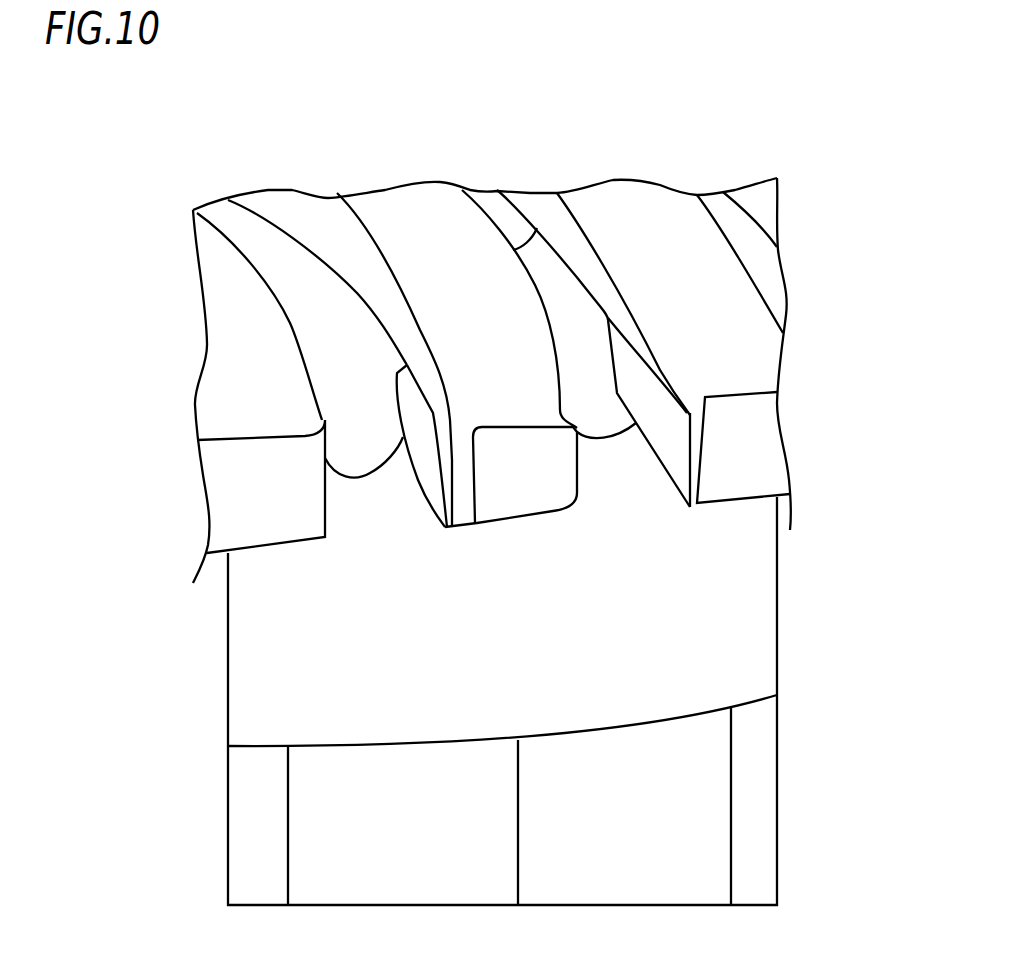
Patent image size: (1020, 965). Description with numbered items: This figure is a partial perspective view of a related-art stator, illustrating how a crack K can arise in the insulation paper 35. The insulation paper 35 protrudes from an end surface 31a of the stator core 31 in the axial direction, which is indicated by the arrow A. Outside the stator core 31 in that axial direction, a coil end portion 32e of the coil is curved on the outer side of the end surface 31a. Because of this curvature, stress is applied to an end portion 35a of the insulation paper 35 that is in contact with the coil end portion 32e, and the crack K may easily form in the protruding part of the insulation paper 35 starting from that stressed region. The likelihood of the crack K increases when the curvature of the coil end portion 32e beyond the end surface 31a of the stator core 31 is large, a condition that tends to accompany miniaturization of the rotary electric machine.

The stator core 31 is at (790, 638).
The end surface 31a is at (407, 517).
The coil end portion 32e is at (240, 346).
The insulation paper 35 is at (228, 517).
The end portion 35a is at (423, 423).
The crack K is at (485, 411).
The arrow A is at (917, 390).